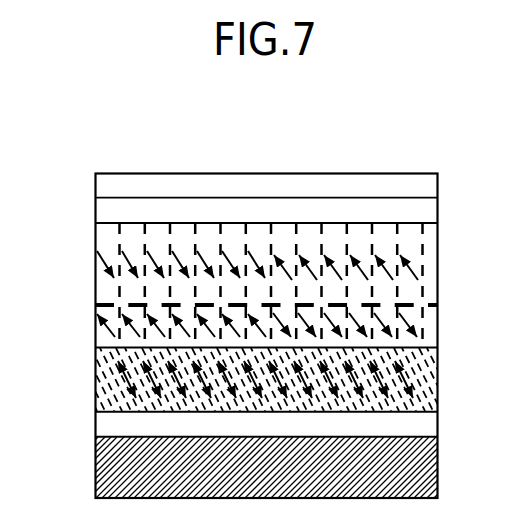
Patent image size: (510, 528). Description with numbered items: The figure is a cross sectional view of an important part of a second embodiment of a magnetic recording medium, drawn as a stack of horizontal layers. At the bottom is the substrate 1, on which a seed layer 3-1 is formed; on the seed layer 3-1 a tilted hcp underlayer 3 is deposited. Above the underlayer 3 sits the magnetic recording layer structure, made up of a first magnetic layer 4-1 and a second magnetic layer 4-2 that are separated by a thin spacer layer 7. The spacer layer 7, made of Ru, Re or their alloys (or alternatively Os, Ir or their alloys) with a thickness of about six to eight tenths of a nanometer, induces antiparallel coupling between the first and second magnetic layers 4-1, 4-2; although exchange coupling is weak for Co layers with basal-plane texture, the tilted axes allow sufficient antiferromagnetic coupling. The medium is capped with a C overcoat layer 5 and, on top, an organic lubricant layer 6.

The substrate 1 is at (103, 471).
The tilted hcp underlayer 3 is at (97, 382).
The seed layer 3-1 is at (103, 429).
The first magnetic layer 4-1 is at (97, 341).
The second magnetic layer 4-2 is at (96, 268).
The C overcoat layer 5 is at (96, 219).
The organic lubricant layer 6 is at (96, 184).
The spacer layer 7 is at (96, 305).